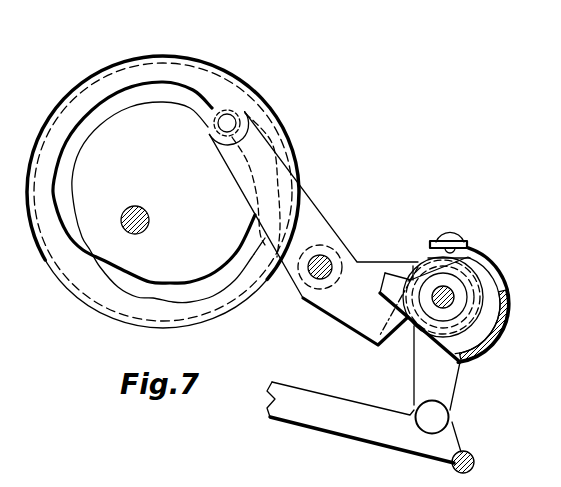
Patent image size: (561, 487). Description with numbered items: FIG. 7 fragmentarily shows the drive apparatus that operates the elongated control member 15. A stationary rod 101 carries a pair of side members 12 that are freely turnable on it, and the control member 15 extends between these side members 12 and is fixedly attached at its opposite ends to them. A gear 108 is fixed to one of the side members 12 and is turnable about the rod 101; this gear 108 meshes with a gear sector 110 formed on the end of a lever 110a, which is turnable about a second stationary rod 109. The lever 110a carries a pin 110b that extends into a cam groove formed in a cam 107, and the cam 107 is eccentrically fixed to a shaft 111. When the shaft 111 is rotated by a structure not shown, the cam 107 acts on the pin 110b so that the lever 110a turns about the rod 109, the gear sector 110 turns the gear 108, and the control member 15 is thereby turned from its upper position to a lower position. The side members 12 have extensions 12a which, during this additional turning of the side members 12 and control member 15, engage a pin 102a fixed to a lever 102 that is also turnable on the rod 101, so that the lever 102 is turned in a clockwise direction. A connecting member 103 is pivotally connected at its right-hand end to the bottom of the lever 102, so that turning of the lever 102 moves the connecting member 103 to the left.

The cam 107 is at (197, 80).
The shaft 111 is at (141, 211).
The pin 110b is at (230, 122).
The lever 110a is at (322, 298).
The gear sector 110 is at (378, 346).
The stationary rod 109 is at (322, 260).
The stationary rod 101 is at (448, 290).
The gear 108 is at (428, 268).
The side member 12 is at (505, 285).
The extension 12a is at (385, 281).
The control member 15 is at (498, 328).
The pin 102a is at (450, 233).
The lever 102 is at (447, 387).
The connecting member 103 is at (297, 397).